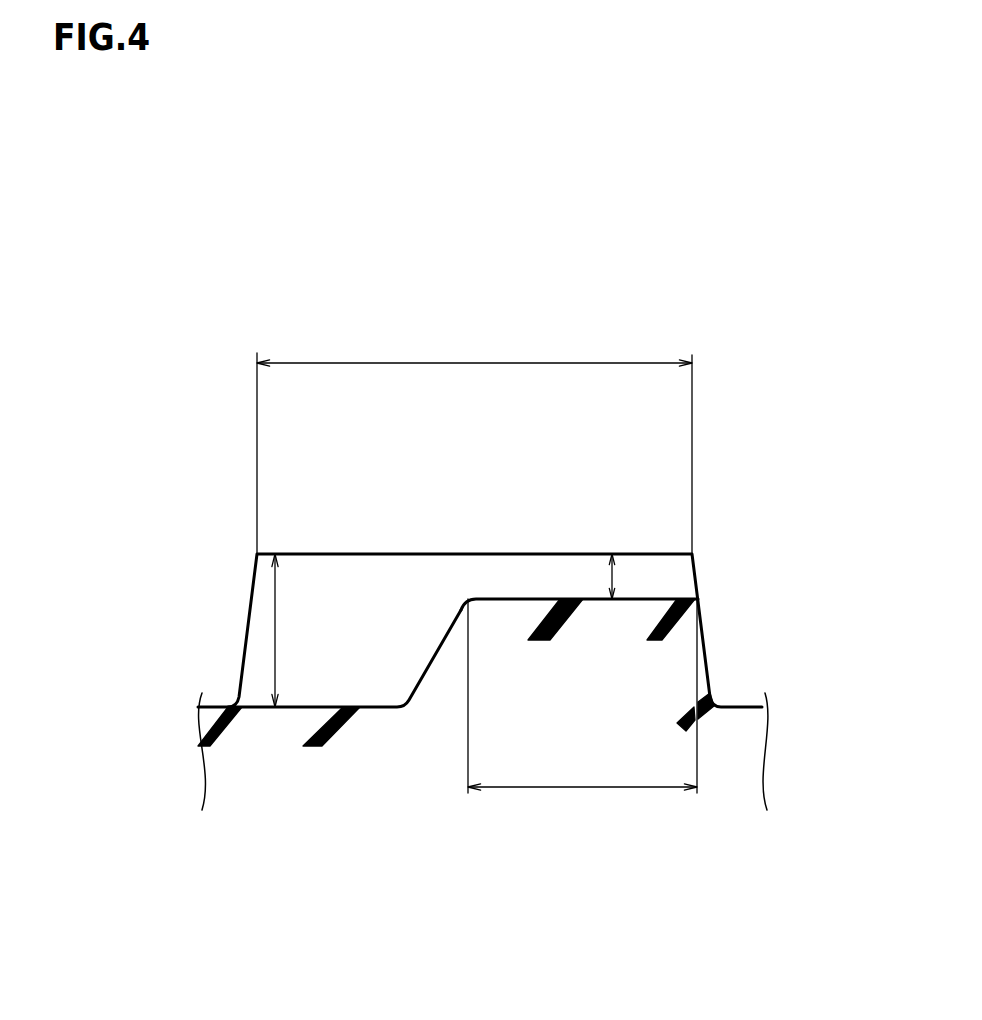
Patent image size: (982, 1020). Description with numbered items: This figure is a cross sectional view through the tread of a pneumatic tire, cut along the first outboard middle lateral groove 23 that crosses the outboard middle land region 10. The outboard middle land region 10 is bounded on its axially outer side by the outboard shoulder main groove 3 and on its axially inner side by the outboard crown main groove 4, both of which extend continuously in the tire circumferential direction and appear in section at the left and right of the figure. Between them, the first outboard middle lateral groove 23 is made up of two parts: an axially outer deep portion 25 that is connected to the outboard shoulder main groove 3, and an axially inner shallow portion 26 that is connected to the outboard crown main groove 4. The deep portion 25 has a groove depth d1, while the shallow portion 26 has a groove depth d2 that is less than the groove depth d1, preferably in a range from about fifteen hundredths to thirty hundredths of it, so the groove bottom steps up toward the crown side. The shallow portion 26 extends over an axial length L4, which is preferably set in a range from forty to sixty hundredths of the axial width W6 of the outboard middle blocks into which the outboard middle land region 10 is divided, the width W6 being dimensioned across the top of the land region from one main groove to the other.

The outboard shoulder main groove 3 is at (223, 682).
The outboard crown main groove 4 is at (725, 680).
The outboard middle land region 10 is at (480, 551).
The first outboard middle lateral groove 23 is at (463, 551).
The deep portion 25 is at (377, 597).
The shallow portion 26 is at (503, 585).
The axial width of the outboard middle blocks W6 is at (474, 440).
The groove depth of the deep portion d1 is at (278, 632).
The groove depth of the shallow portion d2 is at (613, 577).
The axial length of the shallow portion L4 is at (582, 706).